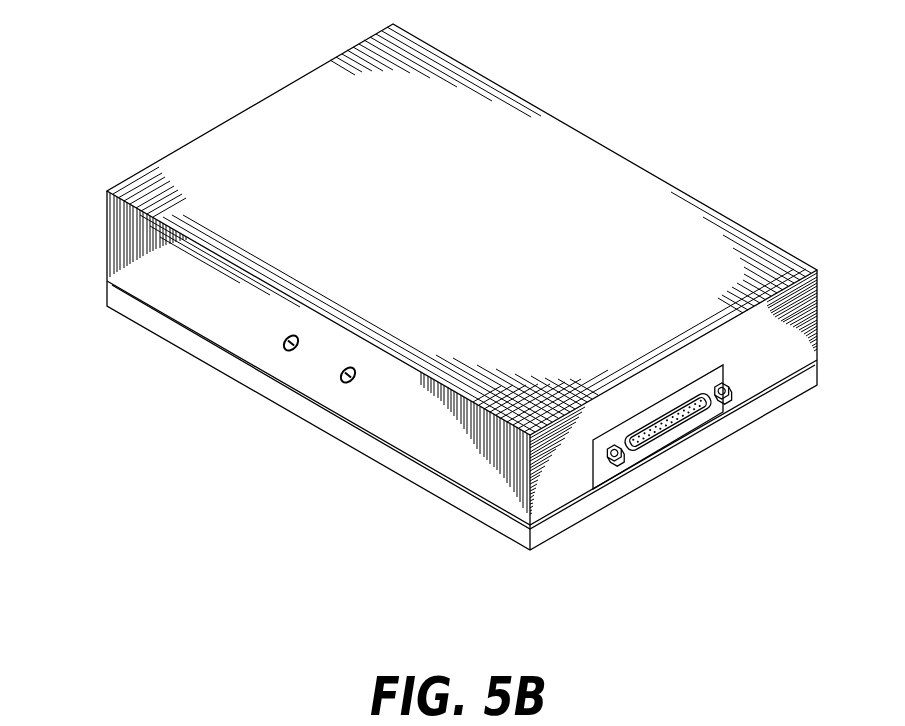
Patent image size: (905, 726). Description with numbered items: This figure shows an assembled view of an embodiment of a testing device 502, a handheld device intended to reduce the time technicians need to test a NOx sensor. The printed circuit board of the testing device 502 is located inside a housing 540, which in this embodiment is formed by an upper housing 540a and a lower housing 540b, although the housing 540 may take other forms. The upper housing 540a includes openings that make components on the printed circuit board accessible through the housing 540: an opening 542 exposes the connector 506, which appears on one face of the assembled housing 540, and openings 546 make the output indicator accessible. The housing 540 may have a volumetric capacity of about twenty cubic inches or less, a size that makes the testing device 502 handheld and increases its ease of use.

The testing device 502 is at (668, 121).
The housing 540 is at (830, 256).
The upper housing 540a is at (117, 221).
The lower housing 540b is at (112, 296).
The opening 542 is at (608, 470).
The connector 506 is at (678, 433).
The opening 546 is at (286, 345).